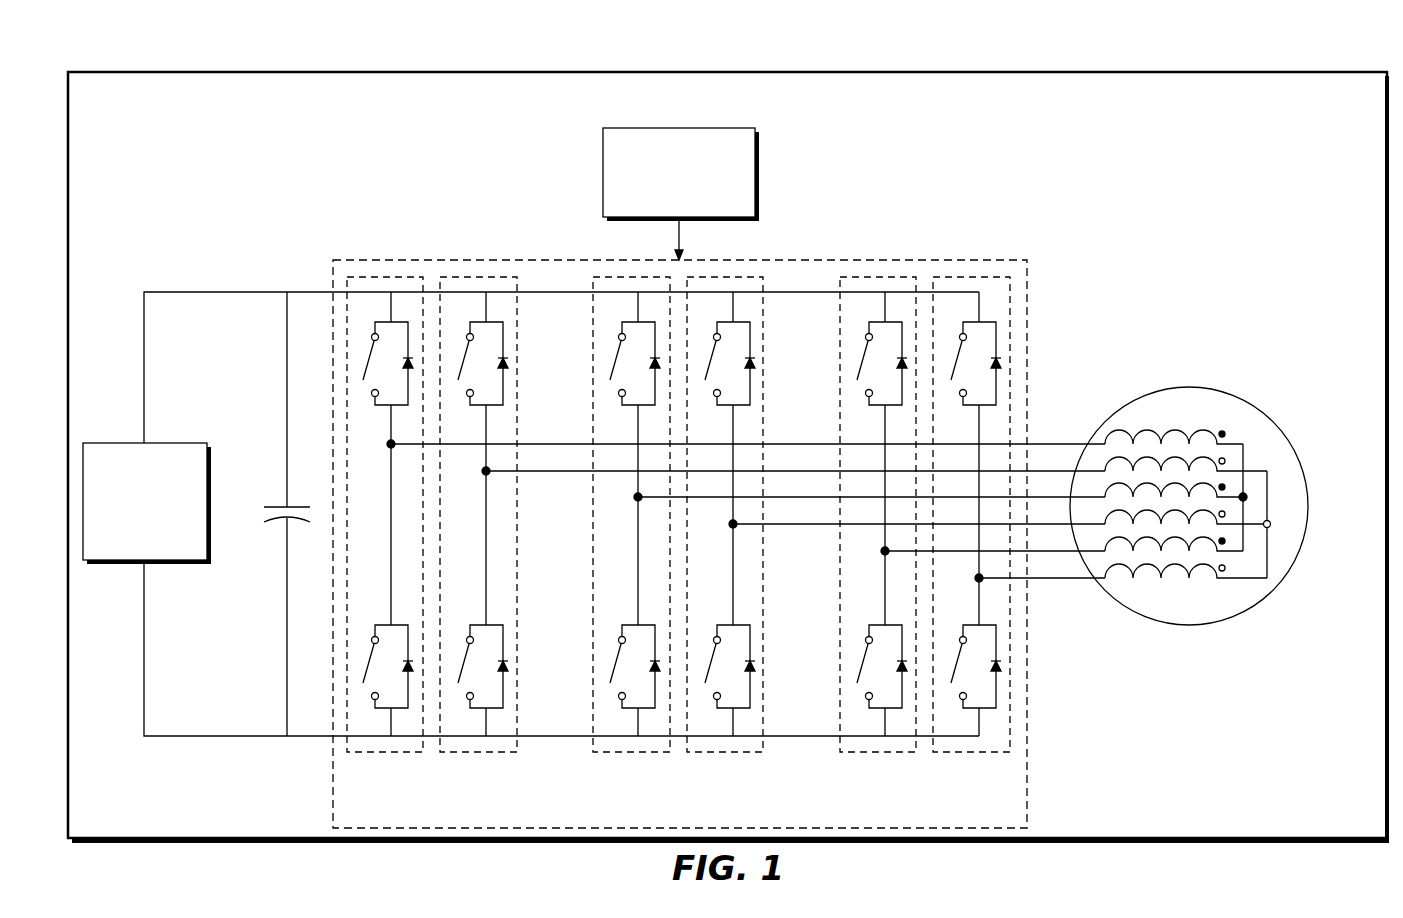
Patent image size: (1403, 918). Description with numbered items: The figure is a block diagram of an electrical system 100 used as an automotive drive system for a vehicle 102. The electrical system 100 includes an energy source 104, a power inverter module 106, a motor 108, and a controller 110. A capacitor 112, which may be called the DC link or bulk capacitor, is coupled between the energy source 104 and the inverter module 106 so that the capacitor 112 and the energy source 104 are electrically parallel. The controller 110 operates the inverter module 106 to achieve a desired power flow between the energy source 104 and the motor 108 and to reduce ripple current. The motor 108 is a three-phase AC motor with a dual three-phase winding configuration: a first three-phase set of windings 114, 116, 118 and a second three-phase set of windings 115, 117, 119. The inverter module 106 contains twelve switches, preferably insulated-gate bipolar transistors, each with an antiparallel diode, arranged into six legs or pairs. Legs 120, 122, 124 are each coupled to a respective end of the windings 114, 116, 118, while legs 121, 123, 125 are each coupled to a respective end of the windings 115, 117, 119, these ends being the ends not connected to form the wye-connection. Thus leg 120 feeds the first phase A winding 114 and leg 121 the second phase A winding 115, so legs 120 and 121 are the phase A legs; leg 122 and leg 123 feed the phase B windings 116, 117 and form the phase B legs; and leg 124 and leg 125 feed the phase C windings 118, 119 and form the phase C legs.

The electrical system 100 is at (1244, 148).
The vehicle 102 is at (415, 72).
The energy source 104 is at (125, 443).
The power inverter module 106 is at (1027, 800).
The motor 108 is at (1254, 404).
The controller 110 is at (603, 150).
The capacitor 112 is at (273, 505).
The first phase A winding 114 is at (1175, 431).
The second phase A winding 115 is at (1207, 446).
The first phase B winding 116 is at (1207, 473).
The second phase B winding 117 is at (1207, 500).
The first phase C winding 118 is at (1207, 527).
The second phase C winding 119 is at (1207, 554).
The leg 120 is at (391, 757).
The leg 121 is at (486, 757).
The leg 122 is at (638, 757).
The leg 123 is at (733, 757).
The leg 124 is at (885, 757).
The leg 125 is at (979, 757).